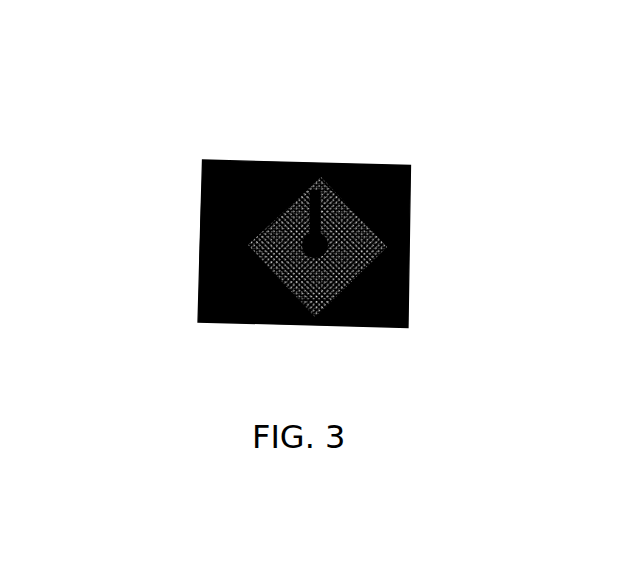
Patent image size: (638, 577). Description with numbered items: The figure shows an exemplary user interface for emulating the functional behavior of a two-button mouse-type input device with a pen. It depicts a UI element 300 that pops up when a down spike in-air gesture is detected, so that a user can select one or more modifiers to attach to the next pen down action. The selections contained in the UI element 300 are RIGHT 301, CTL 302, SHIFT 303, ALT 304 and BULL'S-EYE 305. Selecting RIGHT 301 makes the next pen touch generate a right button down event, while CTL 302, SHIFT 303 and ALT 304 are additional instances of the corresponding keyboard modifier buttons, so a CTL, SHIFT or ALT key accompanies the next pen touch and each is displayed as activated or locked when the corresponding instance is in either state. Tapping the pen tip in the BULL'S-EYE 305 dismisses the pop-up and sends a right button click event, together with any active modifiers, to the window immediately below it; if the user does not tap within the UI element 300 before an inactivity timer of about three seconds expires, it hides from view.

The UI element 300 is at (160, 140).
The RIGHT selection 301 is at (409, 245).
The CTL selection 302 is at (202, 225).
The SHIFT selection 303 is at (323, 167).
The ALT selection 304 is at (345, 325).
The BULL'S-EYE 305 is at (411, 179).